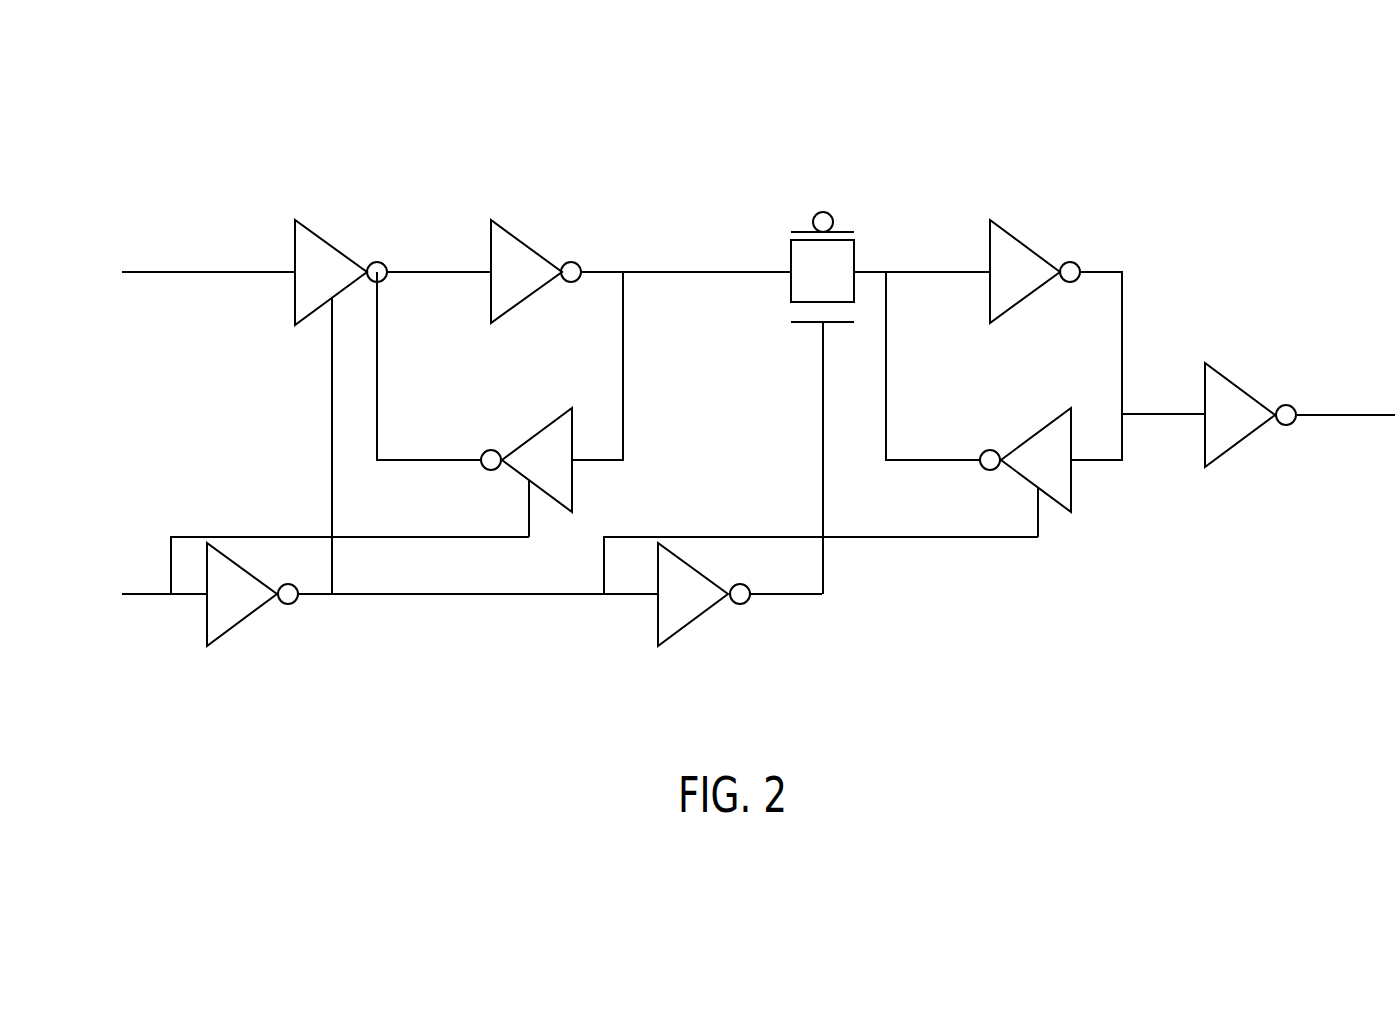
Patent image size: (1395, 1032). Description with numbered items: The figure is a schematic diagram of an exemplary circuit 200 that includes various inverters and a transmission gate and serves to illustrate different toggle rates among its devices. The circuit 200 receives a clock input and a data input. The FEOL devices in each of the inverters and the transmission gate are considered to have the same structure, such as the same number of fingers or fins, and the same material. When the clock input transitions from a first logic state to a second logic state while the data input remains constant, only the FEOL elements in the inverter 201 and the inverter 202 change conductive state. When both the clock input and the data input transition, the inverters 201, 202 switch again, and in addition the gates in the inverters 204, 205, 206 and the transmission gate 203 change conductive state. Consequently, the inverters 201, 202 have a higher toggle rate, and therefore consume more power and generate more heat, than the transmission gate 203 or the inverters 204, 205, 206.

The circuit 200 is at (1203, 167).
The inverter 201 is at (242, 623).
The inverter 202 is at (692, 623).
The transmission gate 203 is at (857, 245).
The inverter 204 is at (532, 247).
The inverter 205 is at (1033, 247).
The inverter 206 is at (1253, 433).